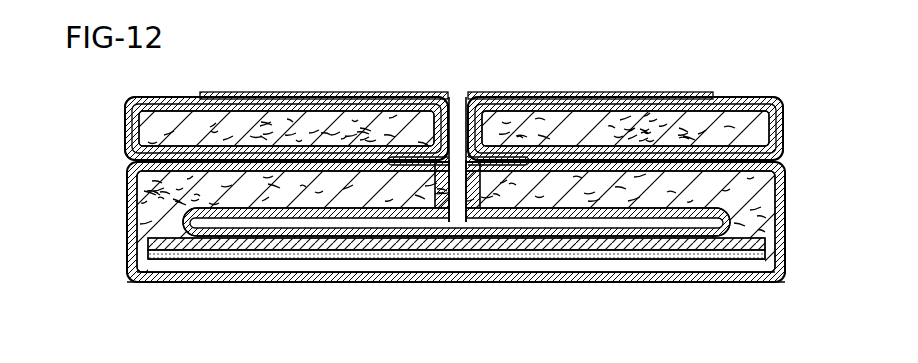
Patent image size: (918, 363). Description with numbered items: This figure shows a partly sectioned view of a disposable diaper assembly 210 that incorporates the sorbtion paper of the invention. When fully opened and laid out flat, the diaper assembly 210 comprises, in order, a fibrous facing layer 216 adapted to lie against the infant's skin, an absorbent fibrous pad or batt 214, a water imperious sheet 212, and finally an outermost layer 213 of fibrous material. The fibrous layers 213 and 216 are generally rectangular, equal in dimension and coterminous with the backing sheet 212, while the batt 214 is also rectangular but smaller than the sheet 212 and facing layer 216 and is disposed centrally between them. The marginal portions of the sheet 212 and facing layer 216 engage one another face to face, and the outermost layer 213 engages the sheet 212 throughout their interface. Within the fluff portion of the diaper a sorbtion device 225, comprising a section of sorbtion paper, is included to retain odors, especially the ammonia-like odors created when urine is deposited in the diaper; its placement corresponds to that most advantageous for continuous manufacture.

The diaper assembly 210 is at (686, 70).
The water imperious sheet 212 is at (367, 272).
The outermost layer 213 is at (425, 284).
The absorbent fibrous pad 214 is at (160, 198).
The fibrous facing layer 216 is at (454, 220).
The sorbtion device 225 is at (215, 250).